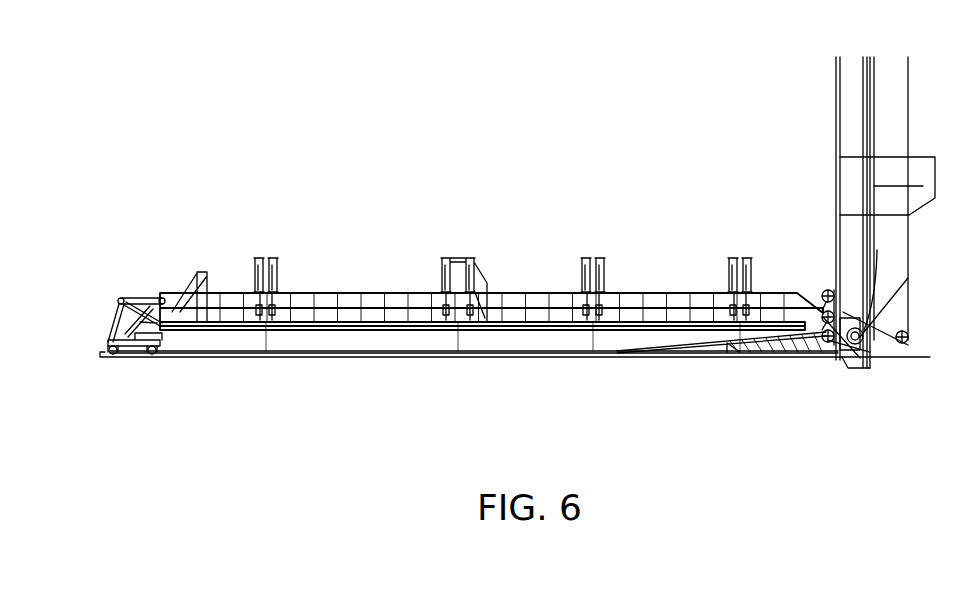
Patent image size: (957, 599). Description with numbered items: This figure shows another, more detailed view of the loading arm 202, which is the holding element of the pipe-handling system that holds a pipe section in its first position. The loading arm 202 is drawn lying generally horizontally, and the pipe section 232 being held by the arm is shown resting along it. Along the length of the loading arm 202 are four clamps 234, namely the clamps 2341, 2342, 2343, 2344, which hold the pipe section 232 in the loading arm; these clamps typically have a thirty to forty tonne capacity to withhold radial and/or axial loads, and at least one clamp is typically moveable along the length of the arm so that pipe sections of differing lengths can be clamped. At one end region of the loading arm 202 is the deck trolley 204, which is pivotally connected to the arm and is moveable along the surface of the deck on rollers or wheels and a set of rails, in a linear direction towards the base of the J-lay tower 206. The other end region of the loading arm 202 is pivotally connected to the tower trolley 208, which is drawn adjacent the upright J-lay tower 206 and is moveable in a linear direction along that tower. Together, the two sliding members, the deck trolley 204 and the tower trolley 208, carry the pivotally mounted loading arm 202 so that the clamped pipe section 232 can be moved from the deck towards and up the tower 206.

The loading arm 202 is at (396, 293).
The deck trolley 204 is at (120, 298).
The J-lay tower 206 is at (837, 118).
The tower trolley 208 is at (827, 290).
The pipe section 232 is at (138, 340).
The clamps 234 is at (451, 271).
The first clamp 2341 is at (258, 255).
The second clamp 2342 is at (442, 255).
The third clamp 2343 is at (585, 255).
The fourth clamp 2344 is at (728, 255).